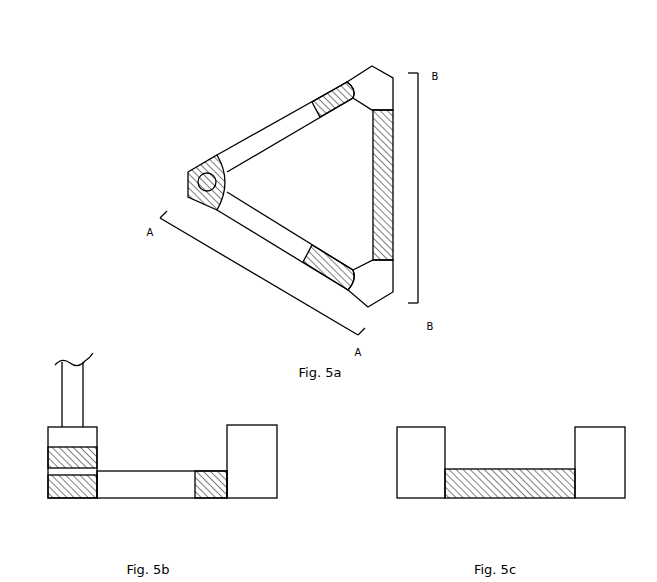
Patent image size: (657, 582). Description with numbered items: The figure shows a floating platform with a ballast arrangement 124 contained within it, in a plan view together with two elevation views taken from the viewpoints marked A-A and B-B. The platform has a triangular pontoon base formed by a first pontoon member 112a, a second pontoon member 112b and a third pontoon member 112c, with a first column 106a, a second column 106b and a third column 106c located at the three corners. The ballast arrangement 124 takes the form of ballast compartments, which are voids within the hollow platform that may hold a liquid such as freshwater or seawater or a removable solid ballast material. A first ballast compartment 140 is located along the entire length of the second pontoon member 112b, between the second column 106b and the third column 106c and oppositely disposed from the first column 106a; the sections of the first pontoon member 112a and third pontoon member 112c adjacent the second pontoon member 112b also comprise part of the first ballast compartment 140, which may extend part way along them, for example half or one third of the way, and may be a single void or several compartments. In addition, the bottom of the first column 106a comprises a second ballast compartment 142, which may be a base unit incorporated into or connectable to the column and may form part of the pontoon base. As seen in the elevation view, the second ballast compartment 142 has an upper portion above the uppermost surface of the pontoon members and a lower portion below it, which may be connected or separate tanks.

In FIG. 5A, the first column 106a is at (186, 184).
In FIG. 5B, the first column 106a is at (88, 438).
In FIG. 5A, the second column 106b is at (375, 283).
In FIG. 5B, the second column 106b is at (250, 442).
In FIG. 5C, the second column 106b is at (425, 450).
In FIG. 5A, the third column 106c is at (373, 86).
In FIG. 5C, the third column 106c is at (600, 440).
In FIG. 5A, the first pontoon member 112a is at (280, 235).
In FIG. 5B, the first pontoon member 112a is at (127, 491).
In FIG. 5A, the second pontoon member 112b is at (392, 190).
In FIG. 5C, the second pontoon member 112b is at (520, 467).
In FIG. 5A, the third pontoon member 112c is at (260, 138).
In FIG. 5A, the ballast arrangement 124 is at (325, 80).
In FIG. 5A, the first ballast compartment 140 is at (390, 230).
In FIG. 5B, the first ballast compartment 140 is at (217, 500).
In FIG. 5B, the second ballast compartment 142 is at (60, 499).